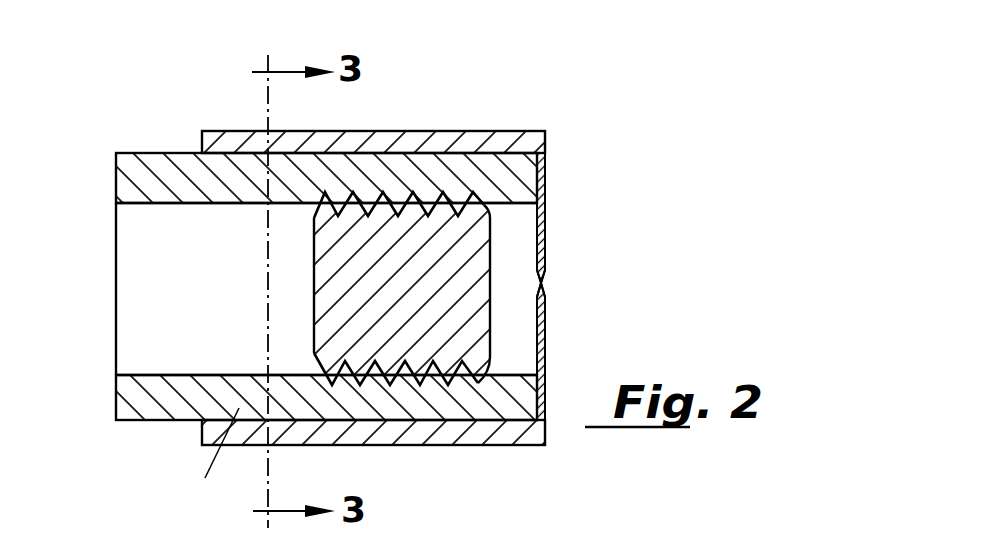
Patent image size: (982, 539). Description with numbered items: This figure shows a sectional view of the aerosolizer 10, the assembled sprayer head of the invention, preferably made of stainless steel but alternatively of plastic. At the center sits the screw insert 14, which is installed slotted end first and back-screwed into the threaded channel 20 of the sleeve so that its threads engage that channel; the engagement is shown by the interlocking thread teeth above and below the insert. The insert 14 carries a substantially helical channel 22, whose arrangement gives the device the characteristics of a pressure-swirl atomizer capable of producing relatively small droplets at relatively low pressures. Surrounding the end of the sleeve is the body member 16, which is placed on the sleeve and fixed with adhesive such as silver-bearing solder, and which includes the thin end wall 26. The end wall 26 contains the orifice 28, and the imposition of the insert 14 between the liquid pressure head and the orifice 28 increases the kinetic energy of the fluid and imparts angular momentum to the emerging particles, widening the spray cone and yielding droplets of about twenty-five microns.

The aerosolizer 10 is at (560, 119).
The screw insert 14 is at (333, 278).
The body member 16 is at (550, 181).
The threaded channel 20 is at (478, 378).
The helical channel 22 is at (398, 207).
The end wall 26 is at (546, 243).
The orifice 28 is at (545, 289).